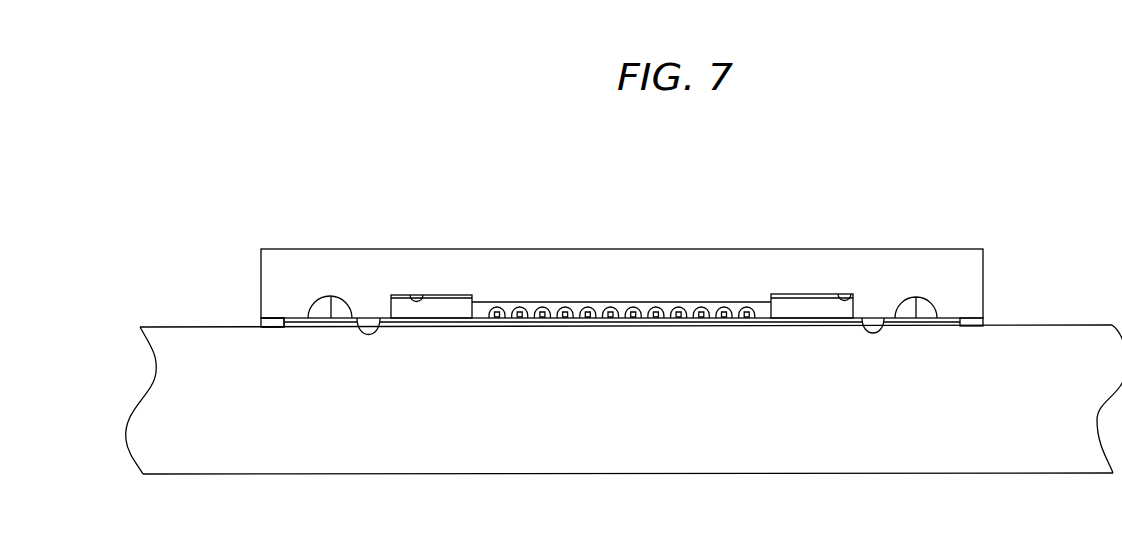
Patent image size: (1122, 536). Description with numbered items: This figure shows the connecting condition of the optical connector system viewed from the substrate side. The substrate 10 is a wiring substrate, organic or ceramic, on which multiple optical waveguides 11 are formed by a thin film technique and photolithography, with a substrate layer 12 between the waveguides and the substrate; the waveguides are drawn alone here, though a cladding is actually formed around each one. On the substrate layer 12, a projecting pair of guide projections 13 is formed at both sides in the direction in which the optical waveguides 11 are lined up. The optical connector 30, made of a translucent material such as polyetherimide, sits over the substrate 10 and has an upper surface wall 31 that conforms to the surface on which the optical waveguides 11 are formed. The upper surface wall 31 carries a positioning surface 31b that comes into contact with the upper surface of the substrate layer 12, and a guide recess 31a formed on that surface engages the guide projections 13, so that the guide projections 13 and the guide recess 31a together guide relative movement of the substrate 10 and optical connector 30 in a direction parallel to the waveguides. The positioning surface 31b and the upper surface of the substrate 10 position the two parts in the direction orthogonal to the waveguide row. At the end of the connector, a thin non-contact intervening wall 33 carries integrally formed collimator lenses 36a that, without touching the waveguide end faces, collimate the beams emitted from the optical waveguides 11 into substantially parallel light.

The substrate 10 is at (1048, 303).
The optical waveguides 11 is at (497, 307).
The substrate layer 12 is at (297, 318).
The guide projections 13 is at (440, 302).
The optical connector 30 is at (635, 228).
The upper surface wall 31 is at (968, 265).
The guide recess 31a is at (414, 296).
The positioning surface 31b is at (357, 318).
The non-contact intervening wall 33 is at (689, 304).
The collimator lenses 36a is at (587, 307).